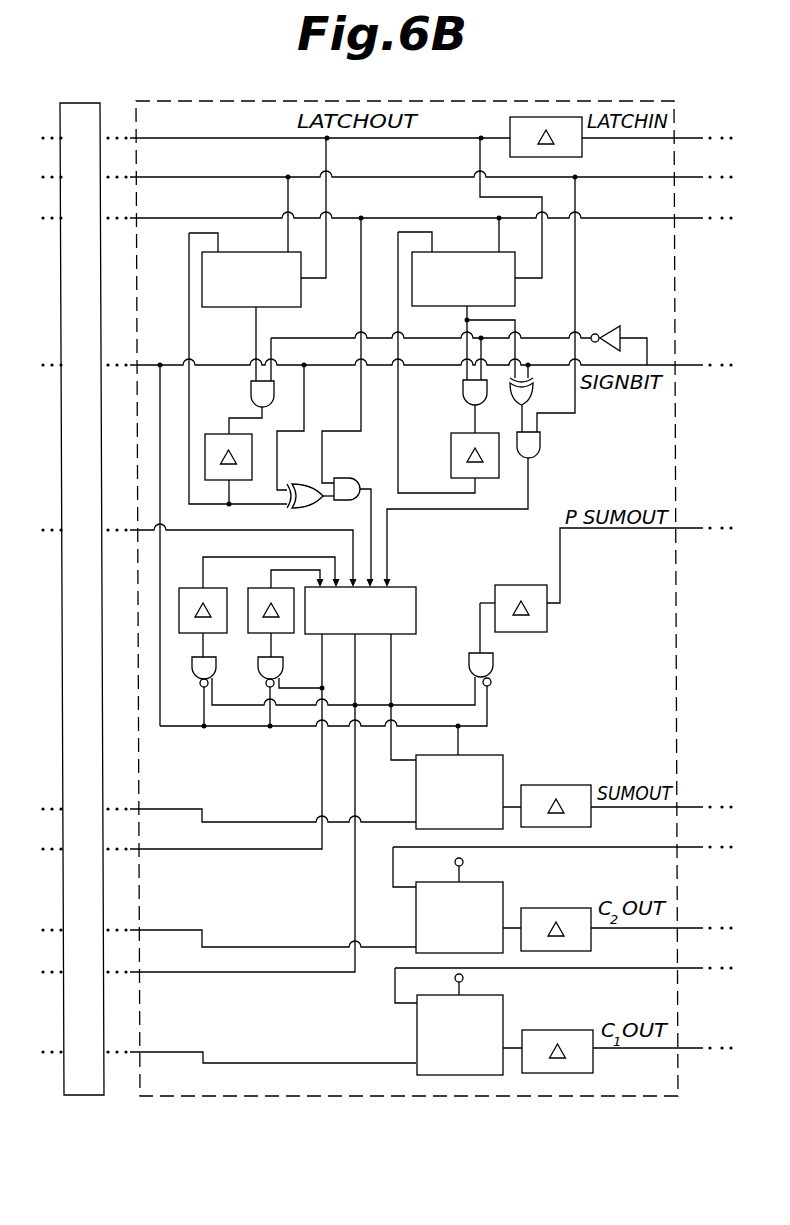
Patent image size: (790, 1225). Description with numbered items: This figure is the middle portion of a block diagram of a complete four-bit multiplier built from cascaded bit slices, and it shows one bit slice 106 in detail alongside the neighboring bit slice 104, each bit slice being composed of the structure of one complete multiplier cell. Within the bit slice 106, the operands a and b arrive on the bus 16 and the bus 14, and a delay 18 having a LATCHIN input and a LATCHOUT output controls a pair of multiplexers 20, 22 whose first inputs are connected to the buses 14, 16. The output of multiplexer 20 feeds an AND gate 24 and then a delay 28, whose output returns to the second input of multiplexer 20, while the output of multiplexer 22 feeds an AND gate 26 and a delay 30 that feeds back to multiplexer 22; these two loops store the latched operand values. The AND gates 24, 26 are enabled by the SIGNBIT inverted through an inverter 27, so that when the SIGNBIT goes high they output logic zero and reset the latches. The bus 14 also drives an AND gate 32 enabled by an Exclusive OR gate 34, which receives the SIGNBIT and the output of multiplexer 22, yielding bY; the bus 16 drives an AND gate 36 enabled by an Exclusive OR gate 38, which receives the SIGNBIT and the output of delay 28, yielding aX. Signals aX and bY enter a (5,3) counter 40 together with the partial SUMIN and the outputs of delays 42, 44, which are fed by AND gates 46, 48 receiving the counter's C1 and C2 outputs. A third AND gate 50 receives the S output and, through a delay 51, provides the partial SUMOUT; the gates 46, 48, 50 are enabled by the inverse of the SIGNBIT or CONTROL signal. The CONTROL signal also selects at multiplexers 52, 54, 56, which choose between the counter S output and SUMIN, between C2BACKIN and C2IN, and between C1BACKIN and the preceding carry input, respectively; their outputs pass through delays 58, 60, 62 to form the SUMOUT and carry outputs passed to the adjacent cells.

The bit slice 104 is at (78, 102).
The bit slice 106 is at (297, 101).
The delay 18 is at (510, 127).
The bus 14 is at (645, 176).
The bus 16 is at (645, 217).
The multiplexer 20 is at (278, 251).
The multiplexer 22 is at (487, 251).
The inverter 27 is at (607, 326).
The AND gate 24 is at (251, 390).
The AND gate 26 is at (463, 392).
The Exclusive OR gate 34 is at (533, 398).
The delay 28 is at (213, 434).
The delay 30 is at (451, 455).
The AND gate 32 is at (541, 444).
The AND gate 36 is at (352, 478).
The Exclusive OR gate 38 is at (313, 502).
The delay 42 is at (185, 588).
The delay 44 is at (262, 588).
The (5,3) counter 40 is at (416, 600).
The delay 51 is at (548, 610).
The AND gate 46 is at (192, 670).
The AND gate 48 is at (258, 660).
The AND gate 50 is at (493, 662).
The multiplexer 52 is at (416, 805).
The delay 58 is at (553, 785).
The multiplexer 54 is at (416, 922).
The delay 60 is at (553, 908).
The multiplexer 56 is at (417, 1030).
The delay 62 is at (553, 1030).